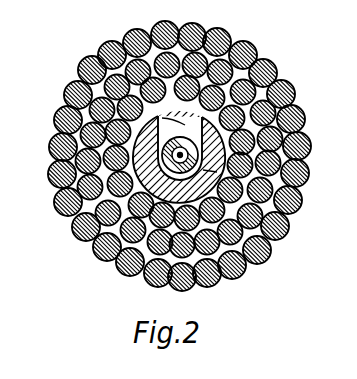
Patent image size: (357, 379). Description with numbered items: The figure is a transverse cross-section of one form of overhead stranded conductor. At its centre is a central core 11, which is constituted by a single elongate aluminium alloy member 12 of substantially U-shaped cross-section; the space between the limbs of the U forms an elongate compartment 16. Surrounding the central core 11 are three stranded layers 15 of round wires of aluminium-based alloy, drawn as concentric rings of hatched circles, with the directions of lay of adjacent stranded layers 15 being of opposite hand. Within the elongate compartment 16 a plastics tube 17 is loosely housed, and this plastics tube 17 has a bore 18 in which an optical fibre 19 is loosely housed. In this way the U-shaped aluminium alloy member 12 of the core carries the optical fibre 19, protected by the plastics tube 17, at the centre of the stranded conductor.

The central core 11 is at (296, 105).
The elongate aluminium alloy member 12 is at (294, 217).
The stranded layers 15 is at (101, 258).
The elongate compartment 16 is at (79, 76).
The plastics tube 17 is at (95, 247).
The bore 18 is at (72, 217).
The optical fibre 19 is at (78, 235).